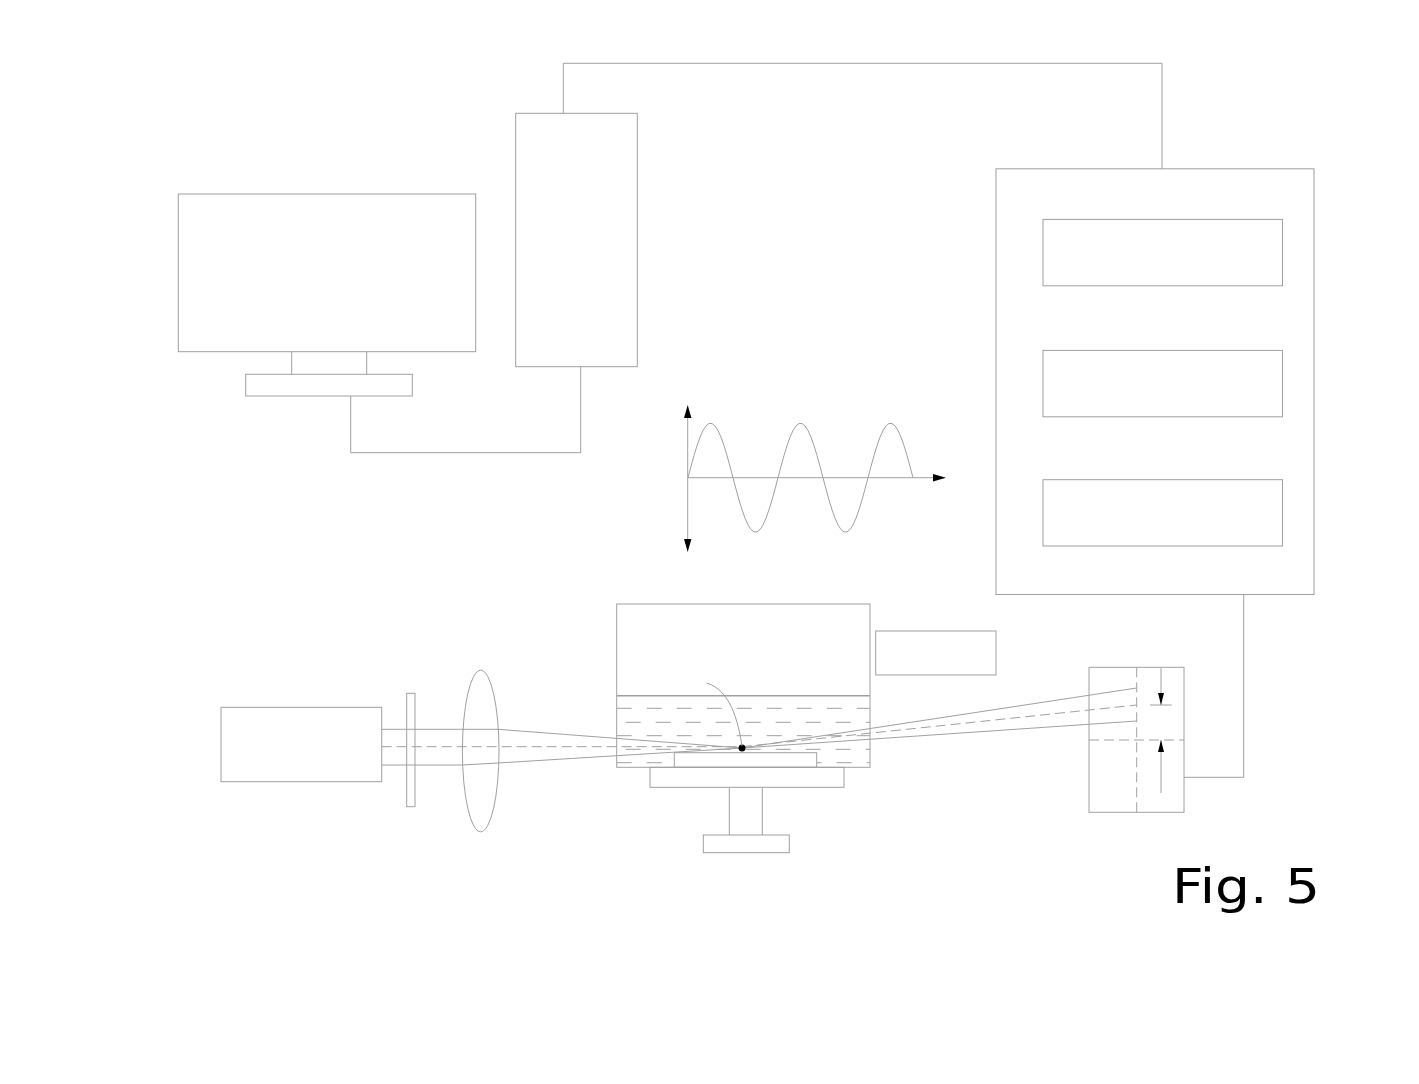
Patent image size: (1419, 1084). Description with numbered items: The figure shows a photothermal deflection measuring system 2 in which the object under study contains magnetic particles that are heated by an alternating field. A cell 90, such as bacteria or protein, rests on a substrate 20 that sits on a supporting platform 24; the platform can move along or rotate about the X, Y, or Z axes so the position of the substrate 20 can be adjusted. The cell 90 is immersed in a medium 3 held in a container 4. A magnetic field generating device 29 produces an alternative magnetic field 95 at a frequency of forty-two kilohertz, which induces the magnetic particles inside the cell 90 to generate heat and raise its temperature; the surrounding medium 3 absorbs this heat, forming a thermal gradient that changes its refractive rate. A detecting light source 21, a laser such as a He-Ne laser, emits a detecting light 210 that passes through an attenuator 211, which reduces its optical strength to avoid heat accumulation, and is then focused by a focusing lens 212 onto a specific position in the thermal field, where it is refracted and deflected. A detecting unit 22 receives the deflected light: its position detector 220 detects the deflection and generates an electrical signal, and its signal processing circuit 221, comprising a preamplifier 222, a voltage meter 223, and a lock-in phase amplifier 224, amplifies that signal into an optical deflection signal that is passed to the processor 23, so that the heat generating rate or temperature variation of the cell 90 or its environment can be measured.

The system 2 is at (166, 60).
The processor 23 is at (527, 113).
The detecting unit 22 is at (974, 145).
The signal processing circuit 221 is at (1314, 343).
The lock-in phase amplifier 224 is at (1282, 250).
The voltage meter 223 is at (1270, 386).
The preamplifier 222 is at (1277, 518).
The magnetic field generating device 29 is at (985, 648).
The detecting light source 21 is at (207, 683).
The detecting light 210 is at (400, 729).
The attenuator 211 is at (412, 693).
The focusing lens 212 is at (481, 672).
The container 4 is at (639, 604).
The medium 3 is at (632, 703).
The substrate 20 is at (805, 758).
The cell 90 is at (745, 751).
The supporting platform 24 is at (772, 840).
The position detector 220 is at (1184, 802).
The alternative magnetic field 95 is at (879, 403).